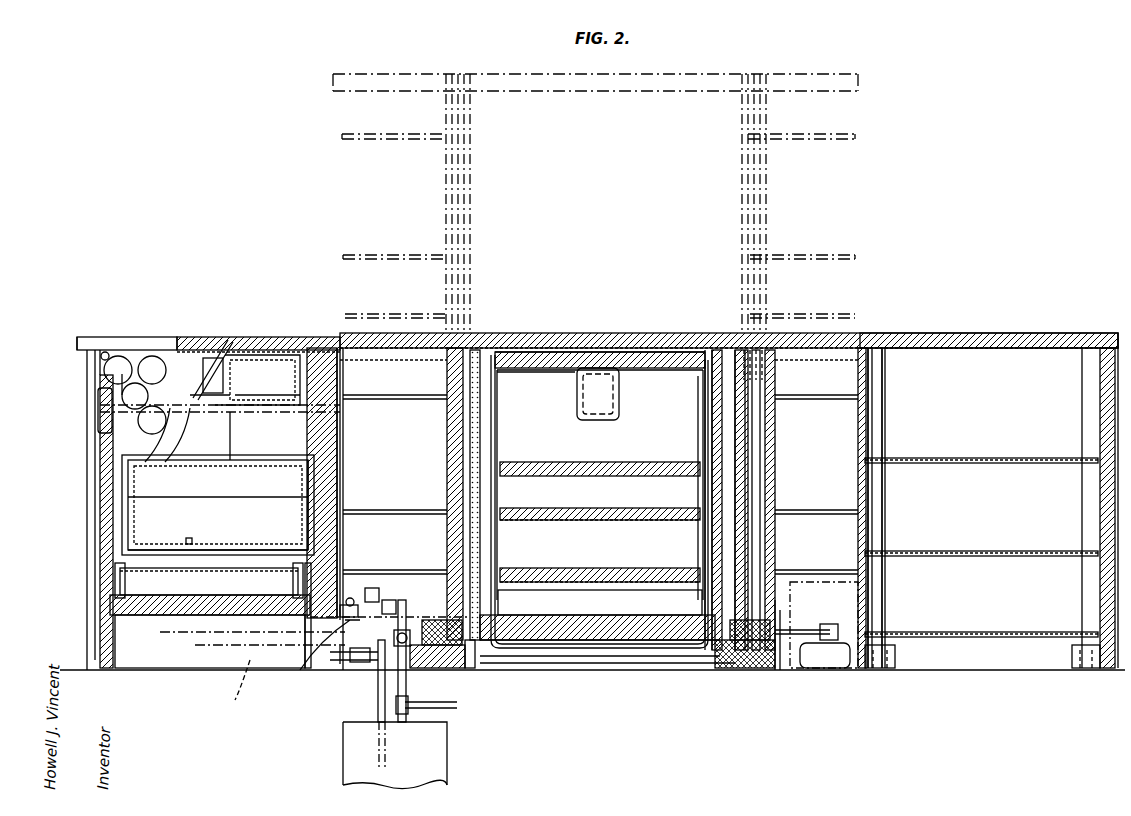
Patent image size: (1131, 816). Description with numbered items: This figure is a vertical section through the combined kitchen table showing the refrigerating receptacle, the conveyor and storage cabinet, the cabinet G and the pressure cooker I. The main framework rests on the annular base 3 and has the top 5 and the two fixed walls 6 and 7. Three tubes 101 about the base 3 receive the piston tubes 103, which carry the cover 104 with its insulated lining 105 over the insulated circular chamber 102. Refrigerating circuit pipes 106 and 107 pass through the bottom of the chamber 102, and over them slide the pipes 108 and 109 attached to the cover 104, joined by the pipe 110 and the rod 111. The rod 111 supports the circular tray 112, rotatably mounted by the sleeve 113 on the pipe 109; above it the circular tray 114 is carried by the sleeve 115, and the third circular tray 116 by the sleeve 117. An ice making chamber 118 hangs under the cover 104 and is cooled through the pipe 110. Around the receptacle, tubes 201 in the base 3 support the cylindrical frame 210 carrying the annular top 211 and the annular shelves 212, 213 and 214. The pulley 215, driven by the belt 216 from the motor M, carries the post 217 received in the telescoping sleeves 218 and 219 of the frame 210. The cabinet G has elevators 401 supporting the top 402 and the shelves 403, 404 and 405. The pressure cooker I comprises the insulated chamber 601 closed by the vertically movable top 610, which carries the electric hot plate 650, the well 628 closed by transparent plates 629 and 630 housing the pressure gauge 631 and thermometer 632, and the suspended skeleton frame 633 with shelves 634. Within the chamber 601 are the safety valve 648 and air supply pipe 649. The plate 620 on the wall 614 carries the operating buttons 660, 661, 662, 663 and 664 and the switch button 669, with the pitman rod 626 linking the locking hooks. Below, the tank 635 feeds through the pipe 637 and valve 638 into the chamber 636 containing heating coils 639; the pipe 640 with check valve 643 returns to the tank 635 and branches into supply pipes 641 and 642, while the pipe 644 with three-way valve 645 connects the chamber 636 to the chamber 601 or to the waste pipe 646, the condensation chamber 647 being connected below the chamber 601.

The top 5 is at (512, 72).
The cover 104 is at (655, 333).
The annular top 211 is at (333, 80).
The annular shelf 212 is at (342, 137).
The annular shelf 213 is at (343, 255).
The annular shelf 214 is at (385, 314).
The cylindrical frame 210 is at (447, 436).
The fixed wall 7 is at (340, 456).
The wall 614 is at (340, 486).
The pipe 108 is at (497, 432).
The refrigerating circuit pipe 106 is at (600, 655).
The insulated lining 105 is at (655, 370).
The pipe 110 is at (553, 372).
The pipe 109 is at (700, 378).
The ice making chamber 118 is at (580, 415).
The third circular tray 116 is at (608, 462).
The sleeve 117 is at (700, 436).
The circular tray 114 is at (552, 508).
The sleeve 115 is at (700, 494).
The circular tray 112 is at (542, 568).
The sleeve 113 is at (700, 550).
The insulated circular chamber 102 is at (600, 602).
The rod 111 is at (652, 583).
The refrigerating circuit pipe 107 is at (705, 655).
The tube 101 is at (715, 670).
The piston tube 103 is at (748, 670).
The post 217 is at (778, 680).
The telescoping sleeve 218 is at (770, 448).
The telescoping sleeve 219 is at (770, 480).
The belt 216 is at (808, 632).
The motor M is at (826, 668).
The cabinet G is at (955, 335).
The top 402 is at (1042, 333).
The fixed wall 6 is at (1100, 390).
The elevator 401 is at (885, 405).
The shelf 403 is at (972, 458).
The shelf 404 is at (952, 551).
The shelf 405 is at (975, 632).
The vertically movable top 610 is at (262, 337).
The plate 620 is at (87, 370).
The electric switch operating button 669 is at (102, 352).
The operating button 661 is at (125, 356).
The operating button 664 is at (115, 360).
The operating button 662 is at (152, 356).
The operating button 663 is at (98, 412).
The operating button 660 is at (98, 430).
The thermometer 632 is at (210, 358).
The transparent plate 629 is at (218, 345).
The electric hot plate 650 is at (282, 358).
The transparent plate 630 is at (205, 412).
The well 628 is at (195, 400).
The pressure gauge 631 is at (245, 400).
The pitman rod 626 is at (180, 440).
The air supply pipe 649 is at (247, 428).
The pressure cooker I is at (100, 500).
The insulated chamber 601 is at (218, 505).
The skeleton frame 633 is at (308, 508).
The shelves 634 is at (216, 500).
The safety valve 648 is at (186, 540).
The condensation chamber 647 is at (209, 580).
The chamber 636 is at (172, 655).
The electric heating coils 639 is at (252, 677).
The pipe 644 is at (372, 588).
The three-way valve 645 is at (348, 600).
The check valve 643 is at (390, 600).
The pipe 640 is at (400, 612).
The supply pipe 641 is at (394, 640).
The waste pipe 646 is at (345, 620).
The valve 638 is at (350, 665).
The pipe 637 is at (378, 706).
The supply pipe 642 is at (455, 708).
The tank 635 is at (445, 752).
The pulley 215 is at (440, 630).
The annular base 3 is at (440, 668).
The tube 201 is at (470, 668).